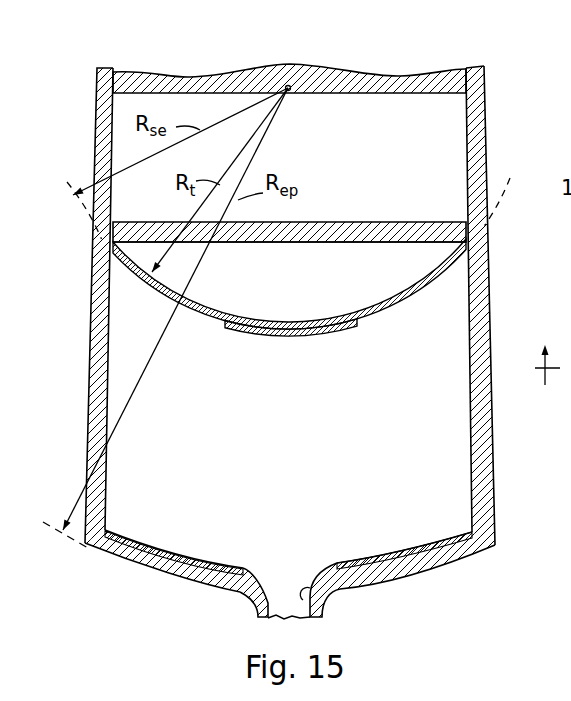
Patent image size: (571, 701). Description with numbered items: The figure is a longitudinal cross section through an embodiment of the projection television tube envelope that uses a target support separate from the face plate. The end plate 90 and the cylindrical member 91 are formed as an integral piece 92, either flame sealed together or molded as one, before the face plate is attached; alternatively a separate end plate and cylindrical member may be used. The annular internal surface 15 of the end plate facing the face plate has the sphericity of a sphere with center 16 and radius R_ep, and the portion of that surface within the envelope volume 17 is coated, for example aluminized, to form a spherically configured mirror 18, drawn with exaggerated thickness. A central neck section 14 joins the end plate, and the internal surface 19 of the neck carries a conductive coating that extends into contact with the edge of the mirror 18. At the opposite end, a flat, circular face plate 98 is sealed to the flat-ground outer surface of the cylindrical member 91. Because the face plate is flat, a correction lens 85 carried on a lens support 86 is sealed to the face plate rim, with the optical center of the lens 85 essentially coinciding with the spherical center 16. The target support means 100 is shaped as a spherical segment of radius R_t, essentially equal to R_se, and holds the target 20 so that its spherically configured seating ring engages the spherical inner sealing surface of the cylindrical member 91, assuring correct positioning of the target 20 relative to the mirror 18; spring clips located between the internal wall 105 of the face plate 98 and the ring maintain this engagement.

The central neck section 14 is at (258, 614).
The annular internal surface 15 is at (546, 380).
The center 16 is at (285, 84).
The envelope volume 17 is at (301, 452).
The mirror 18 is at (172, 551).
The internal surface of neck 19 is at (324, 604).
The target 20 is at (297, 337).
The correction lens 85 is at (430, 86).
The lens support 86 is at (473, 128).
The end plate 90 is at (423, 565).
The cylindrical member 91 is at (477, 333).
The integral piece 92 is at (488, 288).
The face plate 98 is at (427, 222).
The target support means 100 is at (203, 322).
The internal wall of face plate 105 is at (280, 243).